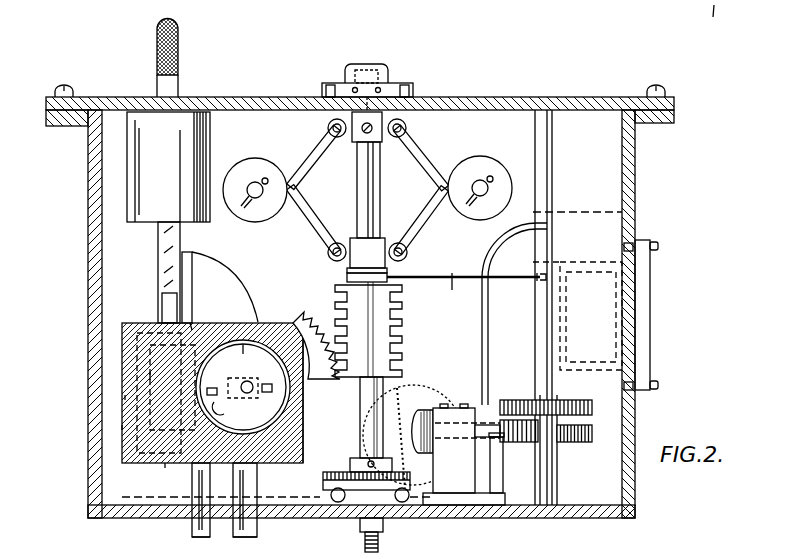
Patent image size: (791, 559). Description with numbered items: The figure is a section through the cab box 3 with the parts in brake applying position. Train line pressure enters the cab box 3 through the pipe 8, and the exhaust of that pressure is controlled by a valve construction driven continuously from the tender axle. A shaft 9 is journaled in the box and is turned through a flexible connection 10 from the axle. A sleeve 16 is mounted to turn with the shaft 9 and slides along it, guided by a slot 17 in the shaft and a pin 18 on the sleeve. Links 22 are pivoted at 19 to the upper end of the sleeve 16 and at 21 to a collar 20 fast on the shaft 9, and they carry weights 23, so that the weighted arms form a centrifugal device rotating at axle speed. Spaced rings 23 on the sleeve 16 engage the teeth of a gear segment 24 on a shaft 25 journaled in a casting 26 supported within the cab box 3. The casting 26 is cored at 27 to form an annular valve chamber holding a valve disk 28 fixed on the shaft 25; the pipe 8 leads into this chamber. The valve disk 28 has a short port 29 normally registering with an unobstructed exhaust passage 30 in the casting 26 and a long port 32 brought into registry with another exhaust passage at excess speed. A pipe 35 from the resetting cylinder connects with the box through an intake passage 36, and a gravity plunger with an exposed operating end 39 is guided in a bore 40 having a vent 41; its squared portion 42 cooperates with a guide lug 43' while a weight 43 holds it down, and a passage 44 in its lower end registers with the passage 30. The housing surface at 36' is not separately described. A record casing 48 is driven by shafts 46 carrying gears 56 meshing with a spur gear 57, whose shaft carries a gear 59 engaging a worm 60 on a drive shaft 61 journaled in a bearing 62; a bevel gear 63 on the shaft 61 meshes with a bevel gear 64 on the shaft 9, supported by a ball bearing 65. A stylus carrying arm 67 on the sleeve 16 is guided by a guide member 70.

The cab box 3 is at (636, 181).
The pipe 8 is at (258, 528).
The shaft 9 is at (360, 421).
The flexible connection 10 is at (386, 549).
The sleeve 16 is at (385, 243).
The slot 17 is at (346, 269).
The pin 18 is at (361, 245).
The pivot 19 is at (409, 256).
The collar 20 is at (373, 122).
The pivot 21 is at (327, 127).
The links 22 is at (428, 151).
The weights 23 is at (259, 170).
The gear segment 24 is at (313, 319).
The shaft 25 is at (251, 394).
The casting 26 is at (305, 398).
The annular valve chamber 27 is at (248, 344).
The valve disk 28 is at (268, 344).
The short port 29 is at (243, 406).
The exhaust passage 30 is at (125, 395).
The long port 32 is at (262, 372).
The pipe 35 is at (197, 526).
The intake passage 36 is at (277, 391).
The housing extension 36' is at (206, 318).
The exposed operating end 39 is at (178, 46).
The guide bore 40 is at (122, 425).
The vent 41 is at (172, 468).
The squared portion 42 is at (160, 262).
The weight 43 is at (191, 167).
The guide lug 43' is at (220, 287).
The passage 44 is at (150, 372).
The shaft 46 is at (549, 164).
The casing 48 is at (588, 262).
The gear 56 is at (562, 400).
The spur gear 57 is at (592, 412).
The gear 59 is at (583, 443).
The worm 60 is at (527, 443).
The drive shaft 61 is at (479, 452).
The bearing 62 is at (496, 472).
The bevel gear 63 is at (441, 390).
The bevel gear 64 is at (329, 471).
The ball bearing 65 is at (338, 503).
The stylus carrying arm 67 is at (431, 297).
The guide member 70 is at (488, 257).